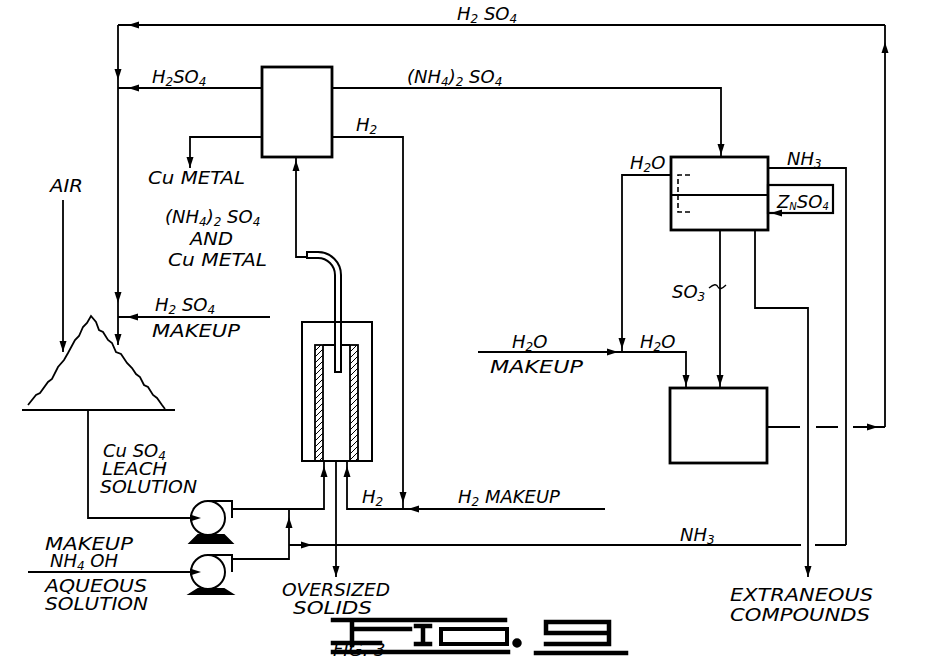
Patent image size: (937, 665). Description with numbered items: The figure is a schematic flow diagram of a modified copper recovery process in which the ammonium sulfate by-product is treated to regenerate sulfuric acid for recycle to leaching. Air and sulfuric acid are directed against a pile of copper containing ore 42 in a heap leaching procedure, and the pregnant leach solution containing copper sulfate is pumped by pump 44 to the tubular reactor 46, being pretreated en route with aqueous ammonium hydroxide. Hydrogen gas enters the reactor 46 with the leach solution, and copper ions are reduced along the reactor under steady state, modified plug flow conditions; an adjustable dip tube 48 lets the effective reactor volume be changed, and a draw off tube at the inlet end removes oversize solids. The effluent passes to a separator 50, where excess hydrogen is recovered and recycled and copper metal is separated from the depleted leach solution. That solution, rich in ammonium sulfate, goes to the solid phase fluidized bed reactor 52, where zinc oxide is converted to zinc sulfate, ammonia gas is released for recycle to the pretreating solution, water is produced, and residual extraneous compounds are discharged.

The pile of copper containing ore 42 is at (135, 385).
The pump 44 is at (197, 530).
The tubular reactor 46 is at (316, 392).
The adjustable dip tube 48 is at (340, 363).
The separator 50 is at (290, 77).
The solid phase fluidized bed reactor 52 is at (696, 157).